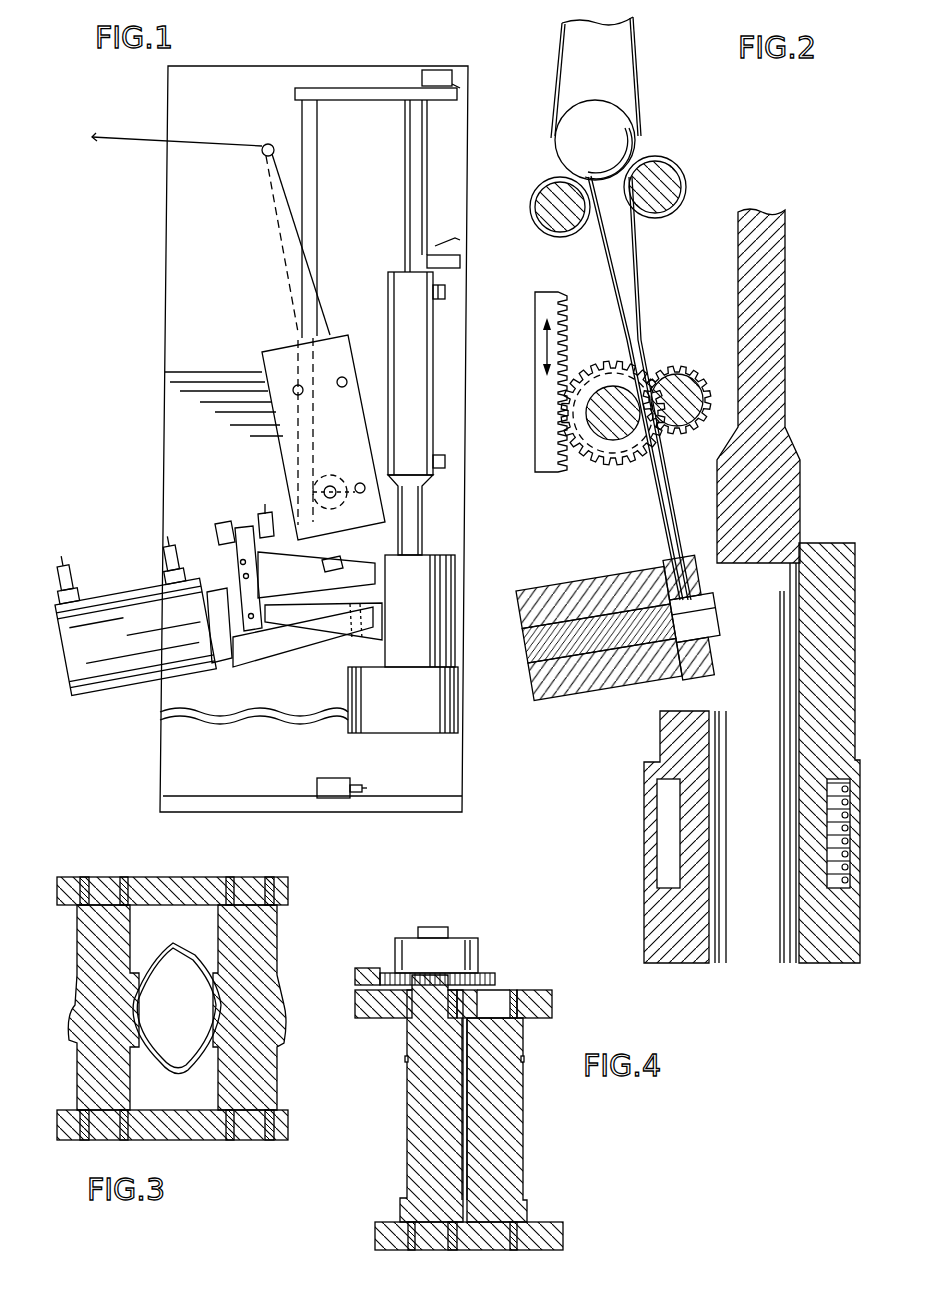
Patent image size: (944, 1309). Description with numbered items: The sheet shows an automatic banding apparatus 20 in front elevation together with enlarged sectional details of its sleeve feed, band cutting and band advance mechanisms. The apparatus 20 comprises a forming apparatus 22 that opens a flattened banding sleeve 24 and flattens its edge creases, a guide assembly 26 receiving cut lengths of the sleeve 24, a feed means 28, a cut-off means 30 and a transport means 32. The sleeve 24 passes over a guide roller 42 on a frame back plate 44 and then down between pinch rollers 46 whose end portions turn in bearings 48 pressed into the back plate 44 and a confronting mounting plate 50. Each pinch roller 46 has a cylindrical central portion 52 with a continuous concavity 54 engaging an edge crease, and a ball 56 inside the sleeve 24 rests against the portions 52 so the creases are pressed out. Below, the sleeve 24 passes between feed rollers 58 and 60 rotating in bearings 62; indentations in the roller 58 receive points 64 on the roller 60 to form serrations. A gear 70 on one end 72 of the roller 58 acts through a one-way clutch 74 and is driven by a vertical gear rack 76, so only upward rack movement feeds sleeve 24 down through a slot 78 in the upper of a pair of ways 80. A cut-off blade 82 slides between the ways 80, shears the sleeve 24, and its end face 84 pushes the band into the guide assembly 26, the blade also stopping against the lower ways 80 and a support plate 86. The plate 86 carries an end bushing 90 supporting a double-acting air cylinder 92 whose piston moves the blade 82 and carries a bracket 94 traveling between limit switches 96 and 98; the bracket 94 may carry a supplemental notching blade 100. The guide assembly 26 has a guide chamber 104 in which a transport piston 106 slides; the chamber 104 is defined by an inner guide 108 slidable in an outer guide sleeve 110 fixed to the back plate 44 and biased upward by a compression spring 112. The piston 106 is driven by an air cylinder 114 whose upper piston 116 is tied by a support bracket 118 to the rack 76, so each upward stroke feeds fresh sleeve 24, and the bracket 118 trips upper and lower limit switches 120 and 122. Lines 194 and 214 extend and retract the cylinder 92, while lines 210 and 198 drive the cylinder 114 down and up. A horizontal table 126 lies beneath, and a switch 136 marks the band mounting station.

In FIG. 1, the automatic banding apparatus 20 is at (240, 210).
In FIG. 2, the forming apparatus 22 is at (664, 160).
In FIG. 2, the banding sleeve 24 is at (638, 258).
In FIG. 3, the banding sleeve 24 is at (188, 944).
In FIG. 4, the banding sleeve 24 is at (466, 1134).
In FIG. 2, the guide assembly 26 is at (856, 542).
In FIG. 2, the feed means 28 is at (676, 364).
In FIG. 1, the cut-off means 30 is at (110, 585).
In FIG. 2, the cut-off means 30 is at (580, 578).
In FIG. 2, the transport means 32 is at (790, 324).
In FIG. 1, the guide roller 42 is at (268, 144).
In FIG. 1, the frame back plate 44 is at (260, 70).
In FIG. 3, the frame back plate 44 is at (188, 878).
In FIG. 4, the frame back plate 44 is at (554, 1006).
In FIG. 1, the pinch rollers 46 is at (338, 380).
In FIG. 2, the pinch rollers 46 is at (663, 210).
In FIG. 3, the pinch rollers 46 is at (276, 932).
In FIG. 3, the bearings 48 is at (124, 878).
In FIG. 1, the mounting plate 50 is at (262, 360).
In FIG. 3, the mounting plate 50 is at (206, 1138).
In FIG. 4, the mounting plate 50 is at (540, 1222).
In FIG. 3, the cylindrical central portion 52 is at (76, 962).
In FIG. 3, the concavity 54 is at (70, 1012).
In FIG. 2, the ball 56 is at (598, 102).
In FIG. 1, the feed roller 58 is at (330, 474).
In FIG. 2, the feed roller 58 is at (608, 392).
In FIG. 4, the feed roller 58 is at (406, 1108).
In FIG. 2, the feed roller 60 is at (672, 438).
In FIG. 4, the feed roller 60 is at (520, 1086).
In FIG. 4, the bearings 62 is at (526, 990).
In FIG. 4, the points 64 is at (406, 1060).
In FIG. 2, the gear 70 is at (618, 462).
In FIG. 4, the gear 70 is at (490, 974).
In FIG. 4, the roller end 72 is at (436, 926).
In FIG. 4, the one-way clutch 74 is at (400, 938).
In FIG. 1, the gear rack 76 is at (312, 174).
In FIG. 2, the gear rack 76 is at (547, 464).
In FIG. 4, the gear rack 76 is at (364, 968).
In FIG. 2, the slot 78 is at (680, 576).
In FIG. 2, the ways 80 is at (627, 568).
In FIG. 2, the cut-off blade 82 is at (522, 652).
In FIG. 1, the end face 84 is at (362, 602).
In FIG. 2, the end face 84 is at (668, 630).
In FIG. 1, the support plate 86 is at (274, 648).
In FIG. 2, the support plate 86 is at (584, 720).
In FIG. 1, the end bushing 90 is at (226, 654).
In FIG. 1, the air cylinder 92 is at (112, 682).
In FIG. 1, the bracket 94 is at (244, 528).
In FIG. 1, the limit switch 96 is at (216, 531).
In FIG. 1, the limit switch 98 is at (264, 517).
In FIG. 1, the supplemental blade 100 is at (318, 544).
In FIG. 2, the guide chamber 104 is at (804, 580).
In FIG. 1, the transport piston 106 is at (424, 522).
In FIG. 2, the transport piston 106 is at (796, 484).
In FIG. 1, the inner guide 108 is at (440, 590).
In FIG. 2, the inner guide 108 is at (660, 738).
In FIG. 1, the outer guide sleeve 110 is at (398, 726).
In FIG. 2, the outer guide sleeve 110 is at (650, 914).
In FIG. 2, the compression spring 112 is at (660, 822).
In FIG. 1, the air cylinder 114 is at (425, 362).
In FIG. 1, the piston 116 is at (424, 160).
In FIG. 1, the support bracket 118 is at (350, 98).
In FIG. 1, the upper limit switch 120 is at (438, 76).
In FIG. 1, the lower limit switch 122 is at (455, 264).
In FIG. 1, the horizontal table 126 is at (462, 804).
In FIG. 1, the switch 136 is at (326, 778).
In FIG. 1, the line 194 is at (76, 558).
In FIG. 1, the line 198 is at (445, 468).
In FIG. 1, the line 210 is at (445, 293).
In FIG. 1, the line 214 is at (160, 556).